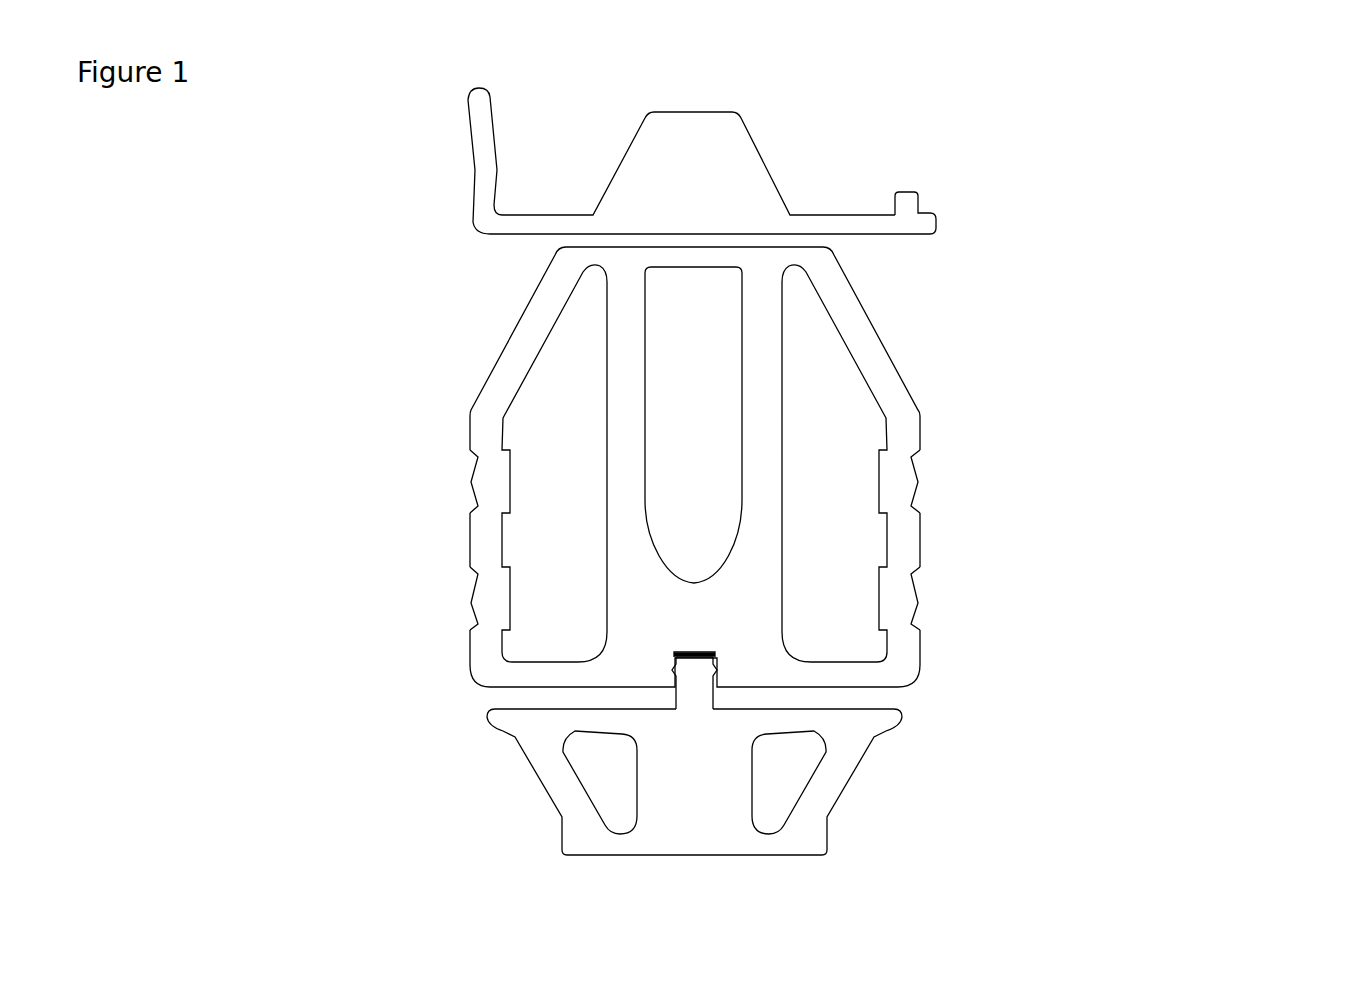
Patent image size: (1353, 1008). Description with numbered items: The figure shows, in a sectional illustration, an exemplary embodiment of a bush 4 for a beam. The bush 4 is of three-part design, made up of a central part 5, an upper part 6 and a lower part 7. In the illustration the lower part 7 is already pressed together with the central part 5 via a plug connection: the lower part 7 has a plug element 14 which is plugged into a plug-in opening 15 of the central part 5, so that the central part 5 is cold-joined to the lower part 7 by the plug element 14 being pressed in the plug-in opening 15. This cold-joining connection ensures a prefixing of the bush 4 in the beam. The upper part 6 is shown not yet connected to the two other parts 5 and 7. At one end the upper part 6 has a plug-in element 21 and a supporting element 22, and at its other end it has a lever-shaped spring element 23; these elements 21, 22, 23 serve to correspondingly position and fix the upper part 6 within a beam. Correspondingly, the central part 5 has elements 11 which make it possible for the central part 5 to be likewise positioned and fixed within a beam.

The bush 4 is at (1160, 773).
The central part 5 is at (622, 467).
The upper part 6 is at (650, 136).
The lower part 7 is at (599, 680).
The elements 11 is at (458, 477).
The plug element 14 is at (702, 695).
The plug-in opening 15 is at (697, 650).
The plug-in element 21 is at (925, 223).
The supporting element 22 is at (910, 205).
The lever-shaped spring element 23 is at (492, 152).